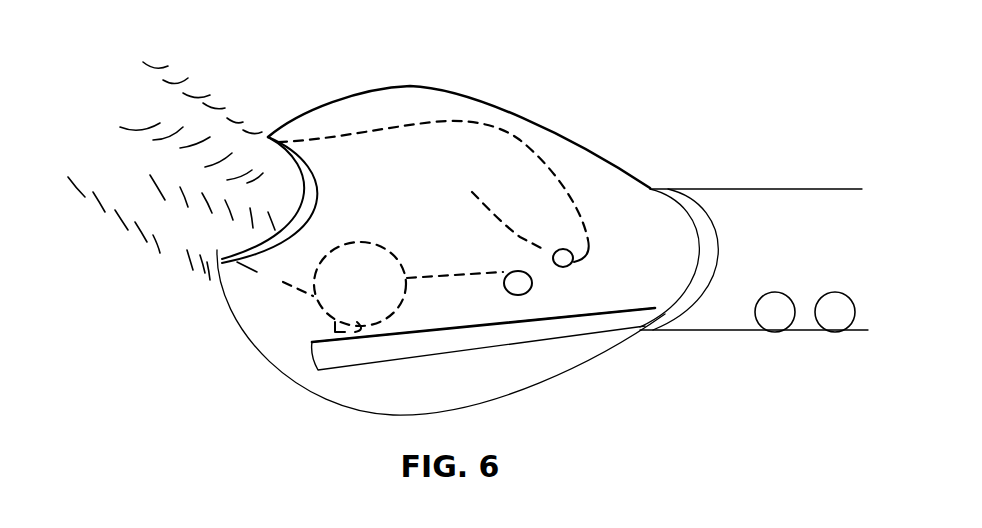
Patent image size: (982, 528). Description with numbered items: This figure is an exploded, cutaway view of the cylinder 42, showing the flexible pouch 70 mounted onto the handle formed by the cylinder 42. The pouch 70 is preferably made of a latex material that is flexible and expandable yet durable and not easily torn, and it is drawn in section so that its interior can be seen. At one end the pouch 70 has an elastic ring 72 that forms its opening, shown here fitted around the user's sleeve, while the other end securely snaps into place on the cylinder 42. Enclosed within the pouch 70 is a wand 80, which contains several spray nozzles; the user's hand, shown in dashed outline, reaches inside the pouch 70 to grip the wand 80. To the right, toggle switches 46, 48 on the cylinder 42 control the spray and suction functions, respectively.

The flexible pouch 70 is at (613, 195).
The elastic ring 72 is at (285, 248).
The wand 80 is at (583, 325).
The cylinder 42 is at (773, 232).
The toggle switch 46 is at (775, 322).
The toggle switch 48 is at (835, 322).